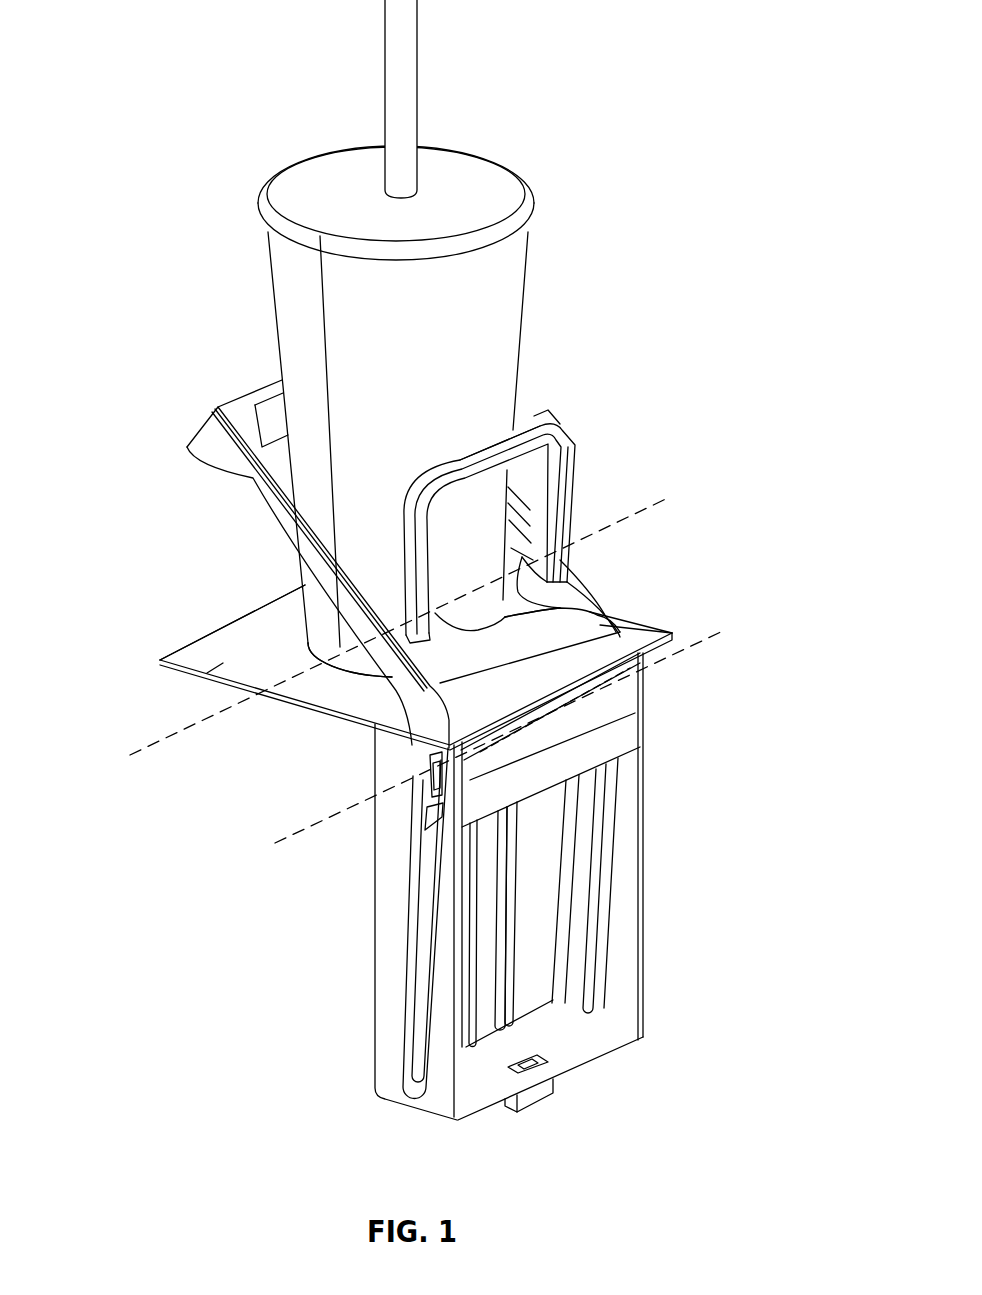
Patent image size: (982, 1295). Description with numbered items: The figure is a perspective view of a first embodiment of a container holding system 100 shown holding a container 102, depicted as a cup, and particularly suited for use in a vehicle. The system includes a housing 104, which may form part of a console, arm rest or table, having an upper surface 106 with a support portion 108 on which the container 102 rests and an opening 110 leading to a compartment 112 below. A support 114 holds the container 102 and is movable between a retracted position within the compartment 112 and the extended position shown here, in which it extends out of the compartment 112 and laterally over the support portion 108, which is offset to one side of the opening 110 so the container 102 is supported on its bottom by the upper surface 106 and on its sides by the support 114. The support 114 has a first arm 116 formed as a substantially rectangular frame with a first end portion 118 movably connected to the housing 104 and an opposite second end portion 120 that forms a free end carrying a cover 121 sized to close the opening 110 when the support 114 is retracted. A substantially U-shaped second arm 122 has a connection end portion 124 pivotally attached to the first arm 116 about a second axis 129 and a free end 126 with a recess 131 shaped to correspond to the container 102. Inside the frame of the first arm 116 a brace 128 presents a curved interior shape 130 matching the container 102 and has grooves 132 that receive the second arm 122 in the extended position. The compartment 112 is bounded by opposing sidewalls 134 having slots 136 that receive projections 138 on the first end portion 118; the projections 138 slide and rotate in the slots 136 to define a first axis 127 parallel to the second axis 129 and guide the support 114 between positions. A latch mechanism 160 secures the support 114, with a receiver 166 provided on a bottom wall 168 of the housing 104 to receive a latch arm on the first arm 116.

The container holding system 100 is at (207, 969).
The container 102 is at (540, 283).
The housing 104 is at (668, 792).
The upper surface 106 is at (203, 678).
The support portion 108 is at (327, 683).
The opening 110 is at (362, 722).
The compartment 112 is at (620, 915).
The support 114 is at (253, 478).
The first arm 116 is at (292, 532).
The first end portion 118 is at (413, 773).
The second end portion 120 is at (187, 447).
The cover 121 is at (238, 402).
The second arm 122 is at (573, 486).
The connection end portion 124 is at (566, 548).
The free end 126 is at (550, 427).
The first axis 127 is at (655, 658).
The brace 128 is at (547, 608).
The second axis 129 is at (297, 677).
The interior shape 130 is at (653, 646).
The recess 131 is at (538, 407).
The grooves 132 is at (545, 607).
The sidewalls 134 is at (385, 963).
The slots 136 is at (427, 927).
The projection 138 is at (425, 830).
The latch mechanism 160 is at (568, 1082).
The receiver 166 is at (553, 1095).
The bottom wall 168 is at (595, 1043).